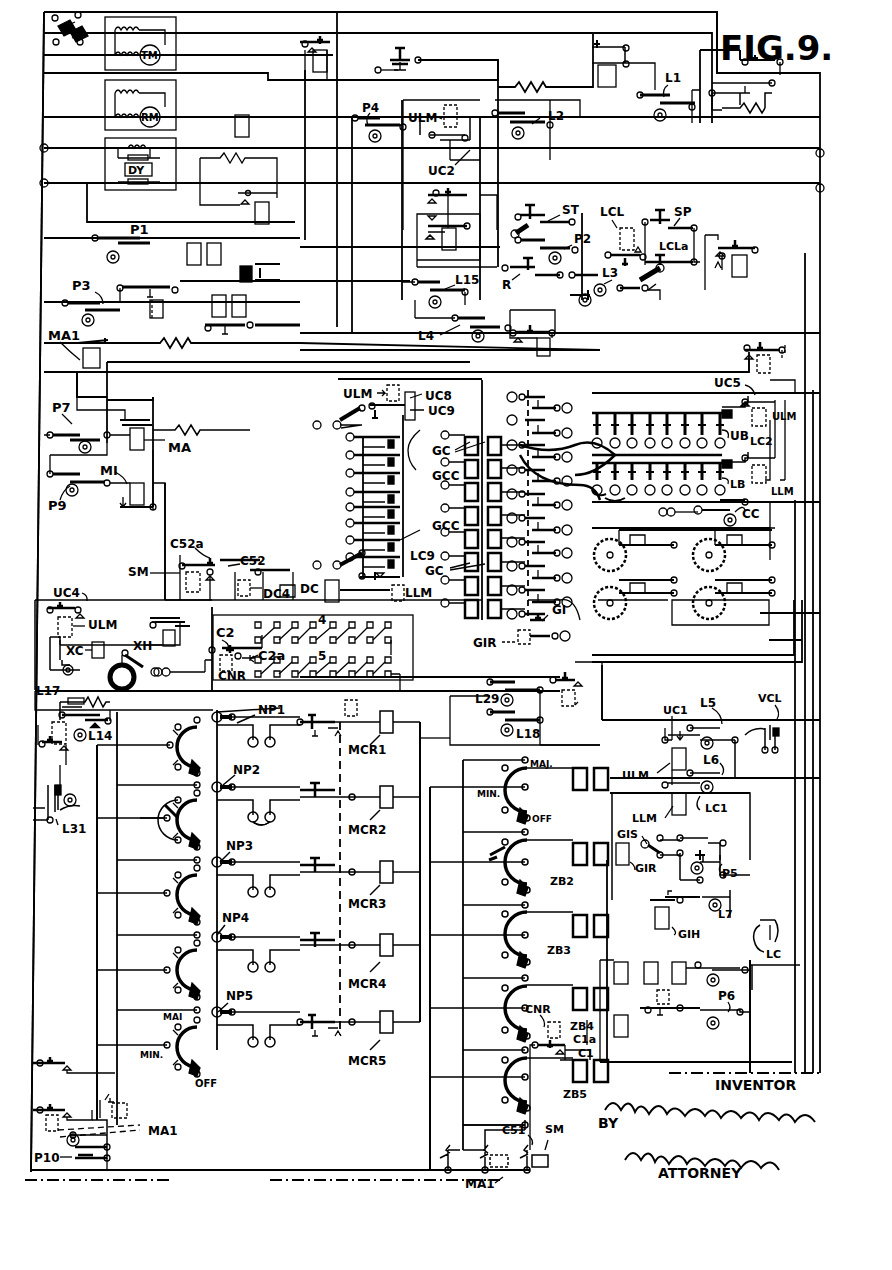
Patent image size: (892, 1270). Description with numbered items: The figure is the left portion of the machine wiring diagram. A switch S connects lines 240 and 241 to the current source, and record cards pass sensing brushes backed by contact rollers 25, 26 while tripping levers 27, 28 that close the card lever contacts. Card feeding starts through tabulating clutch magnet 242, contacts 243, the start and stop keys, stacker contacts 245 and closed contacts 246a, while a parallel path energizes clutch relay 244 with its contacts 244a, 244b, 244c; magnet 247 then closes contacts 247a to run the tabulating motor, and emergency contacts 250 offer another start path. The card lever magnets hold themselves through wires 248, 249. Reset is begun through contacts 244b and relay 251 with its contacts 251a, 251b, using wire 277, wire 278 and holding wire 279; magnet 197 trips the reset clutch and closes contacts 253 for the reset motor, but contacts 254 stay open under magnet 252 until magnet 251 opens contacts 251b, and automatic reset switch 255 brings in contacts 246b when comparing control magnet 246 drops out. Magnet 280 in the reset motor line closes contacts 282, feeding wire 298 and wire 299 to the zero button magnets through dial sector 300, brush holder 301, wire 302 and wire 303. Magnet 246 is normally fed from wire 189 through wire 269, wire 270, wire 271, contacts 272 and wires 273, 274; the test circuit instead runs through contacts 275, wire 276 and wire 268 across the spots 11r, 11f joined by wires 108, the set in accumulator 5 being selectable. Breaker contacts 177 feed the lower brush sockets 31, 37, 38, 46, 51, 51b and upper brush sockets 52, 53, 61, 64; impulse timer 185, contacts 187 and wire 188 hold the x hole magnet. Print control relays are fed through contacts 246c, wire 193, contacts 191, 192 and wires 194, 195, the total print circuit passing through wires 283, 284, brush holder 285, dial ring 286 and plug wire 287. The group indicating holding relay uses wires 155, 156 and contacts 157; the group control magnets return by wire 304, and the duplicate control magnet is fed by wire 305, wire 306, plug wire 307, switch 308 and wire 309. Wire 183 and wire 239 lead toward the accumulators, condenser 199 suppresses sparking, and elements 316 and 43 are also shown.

The accumulator 5 is at (73, 30).
The line 240 is at (44, 100).
The line 241 is at (497, 15).
The tabulating clutch magnet 242 is at (221, 258).
The contacts 243 is at (280, 272).
The clutch relay 244 is at (458, 240).
The relay contact 244a is at (428, 232).
The contacts 244b is at (430, 220).
The relay contact 244c is at (425, 195).
The stacker contacts 245 is at (655, 277).
The comparing control magnet 246 is at (772, 270).
The contacts 246a is at (722, 262).
The contacts 246b is at (728, 240).
The contacts 246c is at (52, 757).
The relay magnet 247 is at (328, 60).
The contacts 247a is at (300, 46).
The wire 248 is at (747, 772).
The wire 249 is at (471, 745).
The contacts 250 is at (400, 67).
The reset control magnet 251 is at (550, 348).
The contacts 251a is at (522, 330).
The contacts 251b is at (641, 1008).
The magnet 252 is at (145, 312).
The contacts 253 is at (267, 332).
The contacts 254 is at (147, 284).
The automatic reset switch 255 is at (663, 292).
The wire 268 is at (395, 673).
The wire 269 is at (447, 682).
The wire 270 is at (692, 644).
The wire 271 is at (644, 662).
The contacts 272 is at (118, 506).
The wire 273 is at (160, 473).
The wire 274 is at (135, 403).
The contacts 275 is at (605, 673).
The wire 276 is at (494, 682).
The wire 277 is at (303, 350).
The wire 278 is at (568, 320).
The wire 279 is at (672, 333).
The magnet 280 is at (250, 130).
The contacts 282 is at (738, 350).
The wire 283 is at (97, 928).
The wire 284 is at (145, 830).
The brush holder 285 is at (170, 808).
The dial ring 286 is at (187, 820).
The plug wire 287 is at (267, 822).
The wire 298 is at (794, 640).
The wire 299 is at (592, 952).
The dial sector 300 is at (507, 860).
The brush holder 301 is at (500, 853).
The wire 302 is at (448, 978).
The wire 303 is at (245, 1182).
The wire 304 is at (439, 374).
The wire 305 is at (644, 374).
The wire 306 is at (352, 415).
The plug wire 307 is at (322, 435).
The duplicate control switch 308 is at (320, 559).
The wire 309 is at (107, 600).
The relay 316 is at (237, 590).
The breaker contacts 177 is at (684, 577).
The wire 183 is at (750, 1045).
The impulse timer 185 is at (112, 683).
The contacts 187 is at (178, 634).
The wire 188 is at (202, 676).
The wire 189 is at (621, 714).
The contacts 191 is at (312, 1018).
The contacts 192 is at (323, 737).
The wire 193 is at (180, 708).
The wire 194 is at (420, 757).
The wire 195 is at (540, 745).
The magnet 197 is at (245, 308).
The condenser 199 is at (73, 708).
The wires 108 is at (380, 620).
The spots 11r is at (395, 627).
The spots 11f is at (395, 642).
The contact roller 25 is at (700, 414).
The contact roller 26 is at (639, 462).
The lever 27 is at (760, 726).
The lever 28 is at (755, 944).
The socket 31 is at (617, 502).
The socket 37 is at (520, 445).
The socket 38 is at (575, 469).
The wiper 43 is at (653, 497).
The socket 46 is at (660, 518).
The socket 51 is at (724, 502).
The contact 51b is at (687, 504).
The socket 52 is at (722, 448).
The socket 53 is at (158, 672).
The socket 61 is at (625, 430).
The socket 64 is at (442, 433).
The wire 155 is at (719, 872).
The wire 156 is at (607, 880).
The contacts 157 is at (680, 905).
The wire 239 is at (800, 613).